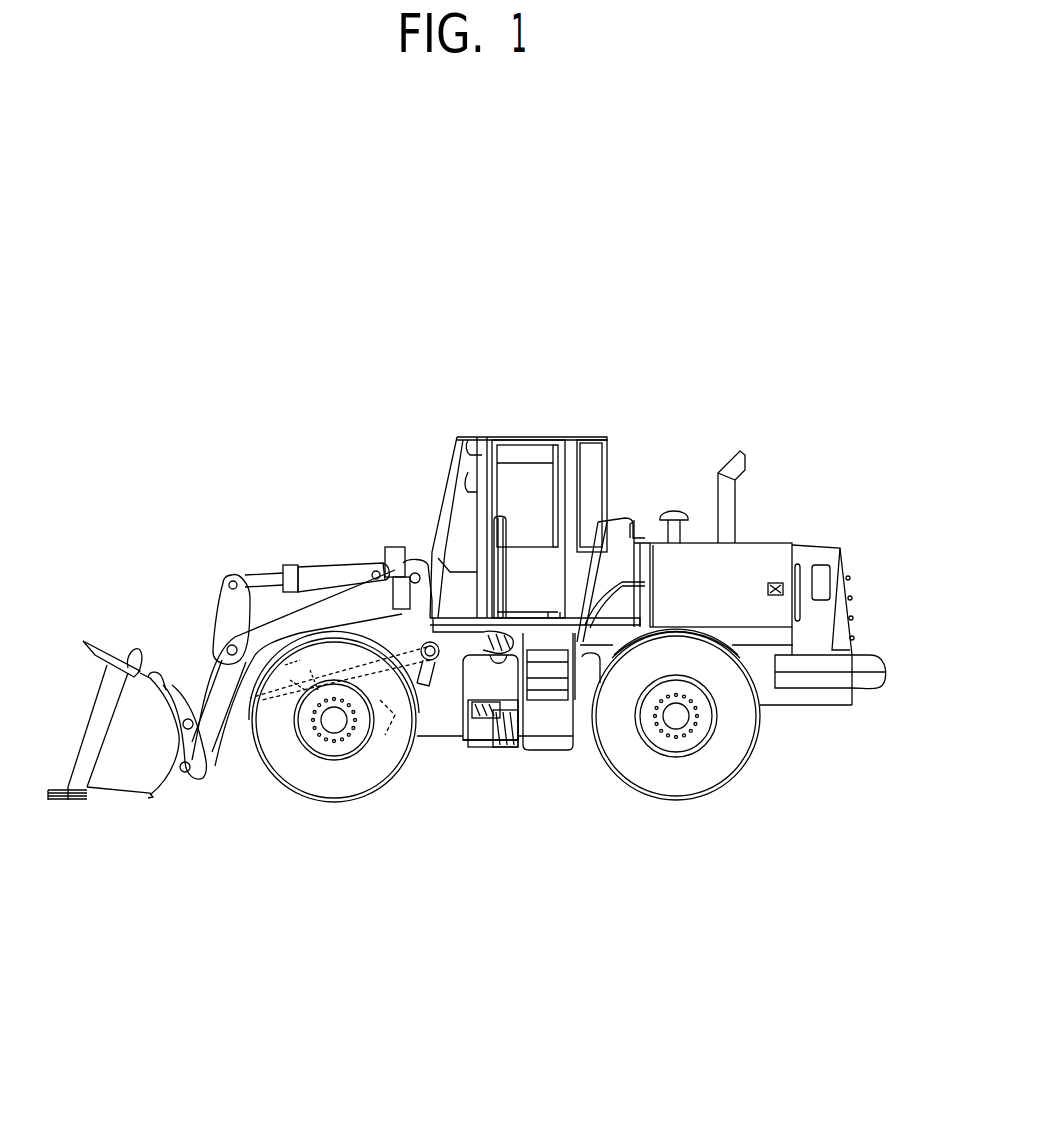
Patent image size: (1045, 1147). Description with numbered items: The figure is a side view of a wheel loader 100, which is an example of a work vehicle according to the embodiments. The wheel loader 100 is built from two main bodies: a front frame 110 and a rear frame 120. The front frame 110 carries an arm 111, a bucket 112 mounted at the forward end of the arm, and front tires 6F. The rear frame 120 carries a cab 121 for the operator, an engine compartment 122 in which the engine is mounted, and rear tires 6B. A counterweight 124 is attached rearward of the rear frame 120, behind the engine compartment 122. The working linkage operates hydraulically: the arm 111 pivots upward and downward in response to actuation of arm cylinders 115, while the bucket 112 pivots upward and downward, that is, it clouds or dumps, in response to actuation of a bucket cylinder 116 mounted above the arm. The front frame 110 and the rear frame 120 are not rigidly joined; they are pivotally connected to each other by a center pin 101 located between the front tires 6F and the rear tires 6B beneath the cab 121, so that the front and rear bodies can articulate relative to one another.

The wheel loader 100 is at (796, 420).
The front frame 110 is at (287, 858).
The rear frame 120 is at (732, 860).
The arm 111 is at (225, 712).
The bucket 112 is at (118, 780).
The arm cylinders 115 is at (417, 758).
The bucket cylinder 116 is at (332, 578).
The cab 121 is at (572, 442).
The engine compartment 122 is at (768, 556).
The counterweight 124 is at (868, 670).
The center pin 101 is at (505, 747).
The tires 6F is at (355, 775).
The tires 6B is at (670, 785).